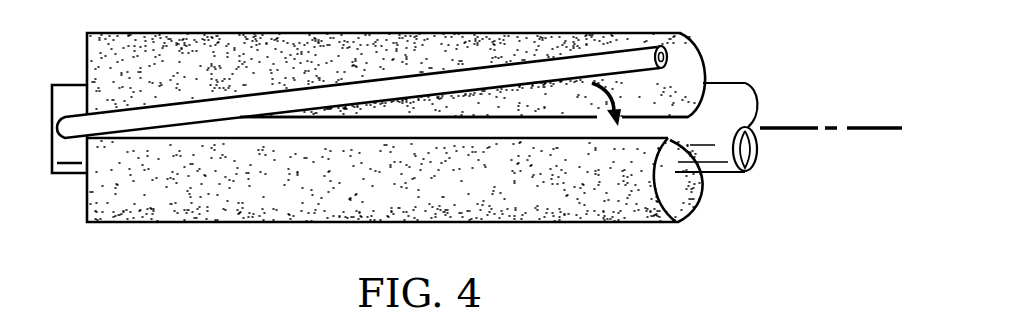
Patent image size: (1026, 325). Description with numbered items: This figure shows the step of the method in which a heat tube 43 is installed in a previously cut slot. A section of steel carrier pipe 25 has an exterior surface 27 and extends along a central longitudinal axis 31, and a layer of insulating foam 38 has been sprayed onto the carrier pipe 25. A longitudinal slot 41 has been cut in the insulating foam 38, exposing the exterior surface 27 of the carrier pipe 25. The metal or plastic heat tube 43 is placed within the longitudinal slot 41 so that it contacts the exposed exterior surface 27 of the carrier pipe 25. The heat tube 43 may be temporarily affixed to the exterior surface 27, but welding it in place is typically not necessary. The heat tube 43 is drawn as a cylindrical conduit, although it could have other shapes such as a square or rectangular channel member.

The steel carrier pipe 25 is at (66, 180).
The exterior surface 27 is at (270, 128).
The central longitudinal axis 31 is at (873, 127).
The insulating foam 38 is at (512, 213).
The longitudinal slot 41 is at (557, 138).
The heat tube 43 is at (145, 118).